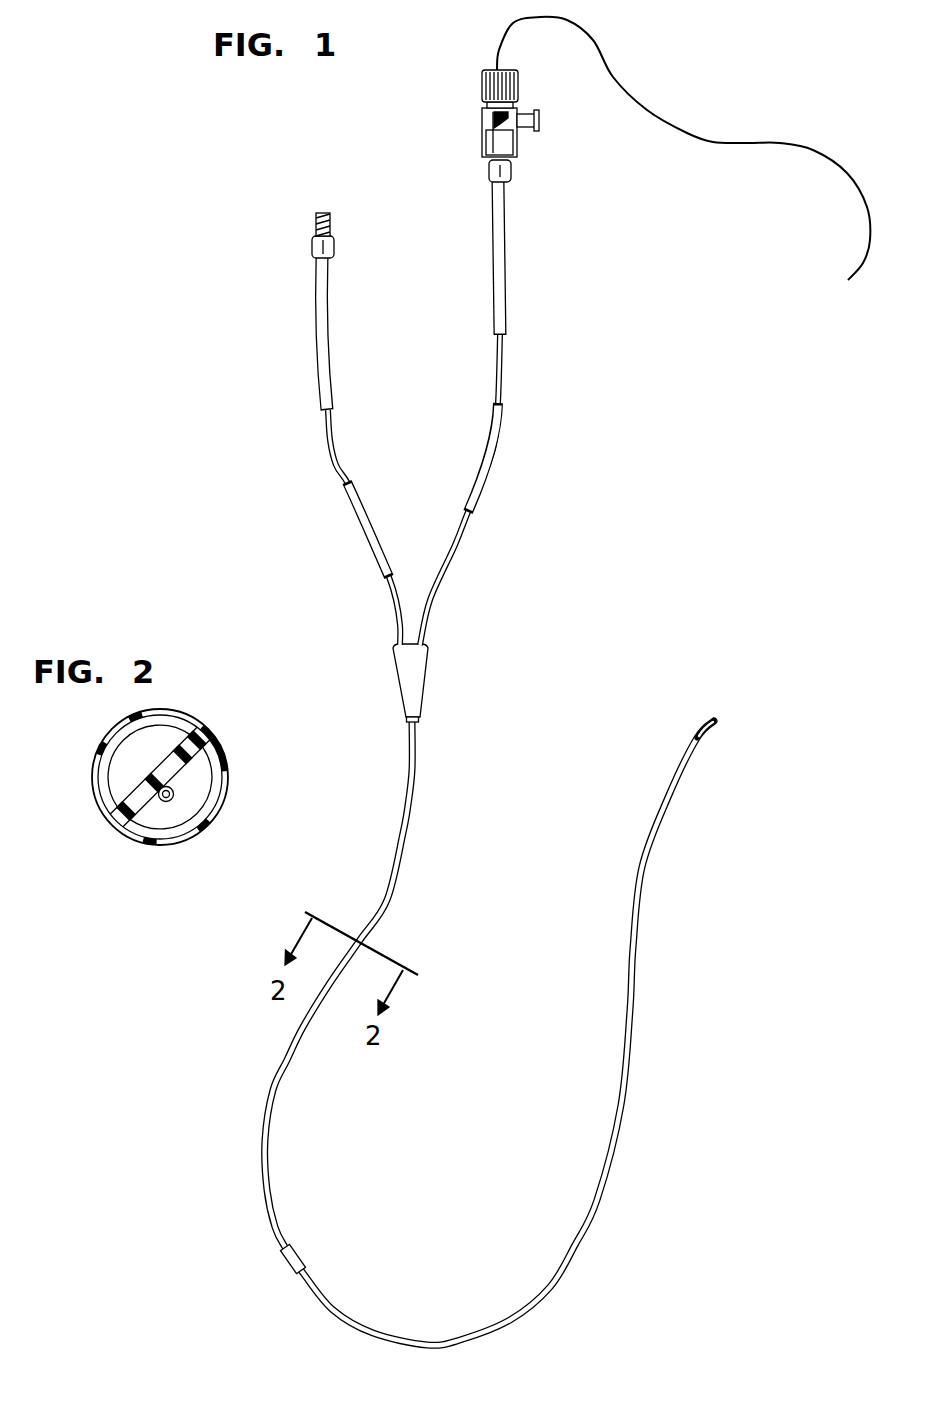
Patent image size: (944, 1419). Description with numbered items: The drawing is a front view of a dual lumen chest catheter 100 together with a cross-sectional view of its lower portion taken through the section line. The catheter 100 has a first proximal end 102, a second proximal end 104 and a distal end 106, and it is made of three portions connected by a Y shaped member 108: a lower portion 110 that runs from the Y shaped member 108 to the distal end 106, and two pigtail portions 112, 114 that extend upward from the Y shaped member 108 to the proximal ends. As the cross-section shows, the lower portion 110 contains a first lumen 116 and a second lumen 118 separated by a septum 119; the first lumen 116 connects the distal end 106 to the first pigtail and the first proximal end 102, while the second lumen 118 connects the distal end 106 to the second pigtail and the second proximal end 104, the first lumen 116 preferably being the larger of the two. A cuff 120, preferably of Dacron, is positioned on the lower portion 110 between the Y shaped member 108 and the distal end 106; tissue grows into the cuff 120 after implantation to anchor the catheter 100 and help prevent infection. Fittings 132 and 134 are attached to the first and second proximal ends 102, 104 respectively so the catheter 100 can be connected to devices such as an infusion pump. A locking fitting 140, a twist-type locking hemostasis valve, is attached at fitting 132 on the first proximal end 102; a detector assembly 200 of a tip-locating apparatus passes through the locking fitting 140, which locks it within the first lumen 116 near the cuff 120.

In FIG. 1, the catheter 100 is at (528, 583).
In FIG. 1, the first proximal end 102 is at (489, 171).
In FIG. 1, the second proximal end 104 is at (316, 222).
In FIG. 1, the distal end 106 is at (716, 725).
In FIG. 1, the Y shaped member 108 is at (415, 670).
In FIG. 1, the lower portion 110 is at (288, 1072).
In FIG. 1, the pigtail portion 112 is at (503, 381).
In FIG. 1, the pigtail portion 114 is at (329, 443).
In FIG. 2, the first lumen 116 is at (200, 773).
In FIG. 2, the second lumen 118 is at (130, 755).
In FIG. 2, the septum 119 is at (126, 722).
In FIG. 1, the cuff 120 is at (282, 1256).
In FIG. 1, the fitting 132 is at (517, 143).
In FIG. 1, the fitting 134 is at (335, 247).
In FIG. 1, the locking fitting 140 is at (482, 88).
In FIG. 1, the detector assembly 200 is at (672, 68).
In FIG. 2, the detector assembly 200 is at (173, 798).